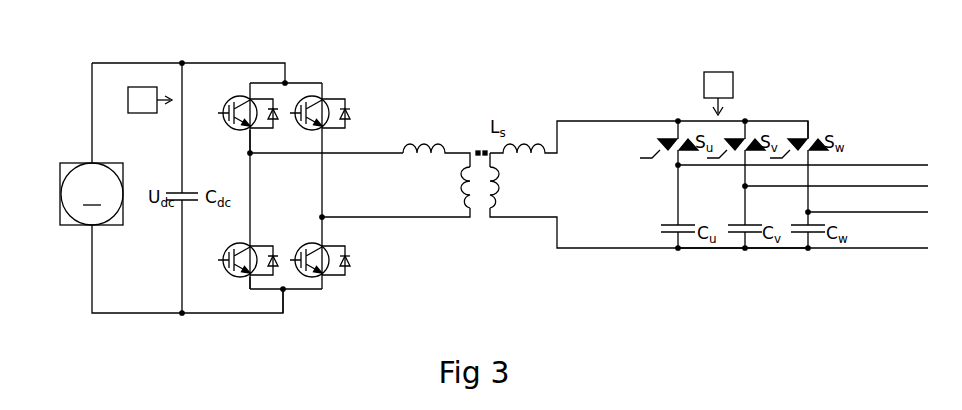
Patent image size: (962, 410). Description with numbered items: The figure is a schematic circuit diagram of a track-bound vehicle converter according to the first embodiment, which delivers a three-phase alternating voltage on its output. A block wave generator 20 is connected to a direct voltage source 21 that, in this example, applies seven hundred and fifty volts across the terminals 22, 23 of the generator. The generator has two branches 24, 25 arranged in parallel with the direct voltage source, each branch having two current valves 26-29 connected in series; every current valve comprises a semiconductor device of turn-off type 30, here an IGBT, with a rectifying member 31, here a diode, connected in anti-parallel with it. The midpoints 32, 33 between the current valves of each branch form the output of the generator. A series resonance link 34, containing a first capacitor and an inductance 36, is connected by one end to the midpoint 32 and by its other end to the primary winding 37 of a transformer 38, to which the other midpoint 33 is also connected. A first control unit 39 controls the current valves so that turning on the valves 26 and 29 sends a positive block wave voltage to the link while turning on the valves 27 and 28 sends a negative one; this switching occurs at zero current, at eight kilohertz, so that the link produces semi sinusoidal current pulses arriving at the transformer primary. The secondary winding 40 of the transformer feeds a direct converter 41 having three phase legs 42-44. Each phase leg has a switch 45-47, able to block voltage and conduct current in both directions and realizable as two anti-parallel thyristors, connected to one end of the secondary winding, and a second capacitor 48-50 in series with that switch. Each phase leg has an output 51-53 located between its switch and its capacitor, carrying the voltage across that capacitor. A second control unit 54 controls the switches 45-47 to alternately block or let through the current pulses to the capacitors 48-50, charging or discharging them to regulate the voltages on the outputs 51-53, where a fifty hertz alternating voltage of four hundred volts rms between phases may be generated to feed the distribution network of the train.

The block wave generator 20 is at (322, 292).
The direct voltage source 21 is at (63, 163).
The terminal 22 is at (292, 82).
The terminal 23 is at (285, 292).
The branch 24 is at (250, 221).
The branch 25 is at (322, 163).
The current valve 26 is at (262, 96).
The current valve 27 is at (263, 273).
The current valve 28 is at (333, 97).
The current valve 29 is at (335, 276).
The semiconductor device of turn-off type 30 is at (243, 131).
The rectifying member 31 is at (346, 98).
The midpoint 32 is at (250, 155).
The midpoint 33 is at (322, 217).
The series resonance link 34 is at (400, 188).
The inductance 36 is at (410, 143).
The primary winding 37 is at (472, 219).
The transformer 38 is at (490, 219).
The first control unit 39 is at (143, 87).
The secondary winding 40 is at (480, 217).
The direct converter 41 is at (733, 252).
The phase leg 42 is at (678, 183).
The phase leg 43 is at (745, 188).
The phase leg 44 is at (808, 184).
The switch 45 is at (687, 137).
The switch 46 is at (752, 137).
The switch 47 is at (817, 137).
The second capacitor 48 is at (688, 236).
The second capacitor 49 is at (750, 236).
The second capacitor 50 is at (825, 236).
The output 51 is at (858, 165).
The output 52 is at (890, 186).
The output 53 is at (880, 215).
The second control unit 54 is at (718, 72).